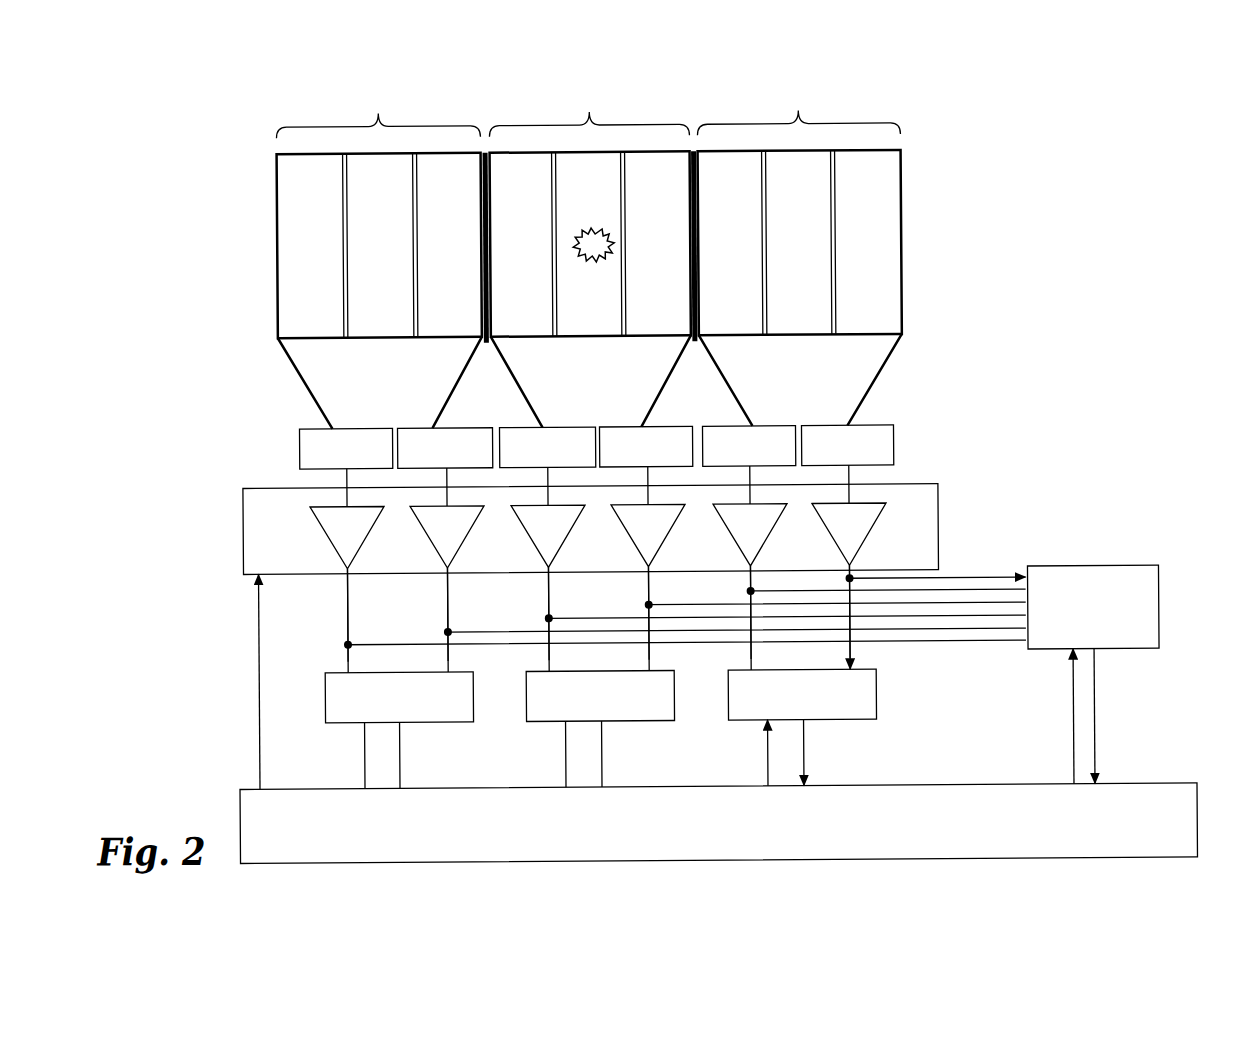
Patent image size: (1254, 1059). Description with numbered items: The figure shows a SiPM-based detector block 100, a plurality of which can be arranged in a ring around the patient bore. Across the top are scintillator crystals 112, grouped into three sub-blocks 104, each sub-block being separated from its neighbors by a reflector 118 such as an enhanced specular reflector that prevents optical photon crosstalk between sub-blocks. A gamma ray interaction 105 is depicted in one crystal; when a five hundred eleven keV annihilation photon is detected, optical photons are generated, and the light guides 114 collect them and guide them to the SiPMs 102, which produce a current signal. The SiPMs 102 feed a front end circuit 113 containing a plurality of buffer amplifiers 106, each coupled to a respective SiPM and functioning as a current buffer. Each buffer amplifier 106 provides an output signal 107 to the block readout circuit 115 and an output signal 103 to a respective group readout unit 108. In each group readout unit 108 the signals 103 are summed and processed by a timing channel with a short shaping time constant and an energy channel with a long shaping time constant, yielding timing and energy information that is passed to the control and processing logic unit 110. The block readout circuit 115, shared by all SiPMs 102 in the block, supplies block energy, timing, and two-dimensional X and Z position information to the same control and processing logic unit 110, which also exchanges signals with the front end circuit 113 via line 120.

The detector block 100 is at (1106, 168).
The SiPMs 102 is at (894, 455).
The output signal 103 is at (333, 568).
The sub-block 104 is at (589, 209).
The gamma ray interaction 105 is at (584, 233).
The buffer amplifier 106 is at (868, 528).
The output signal 107 is at (1020, 652).
The group readout unit 108 is at (324, 722).
The control and processing logic unit 110 is at (1193, 826).
The scintillator crystals 112 is at (797, 167).
The front end circuit 113 is at (243, 539).
The light guides 114 is at (874, 376).
The block readout circuit 115 is at (1158, 604).
The reflector 118 is at (490, 178).
The feedback line 120 is at (258, 697).